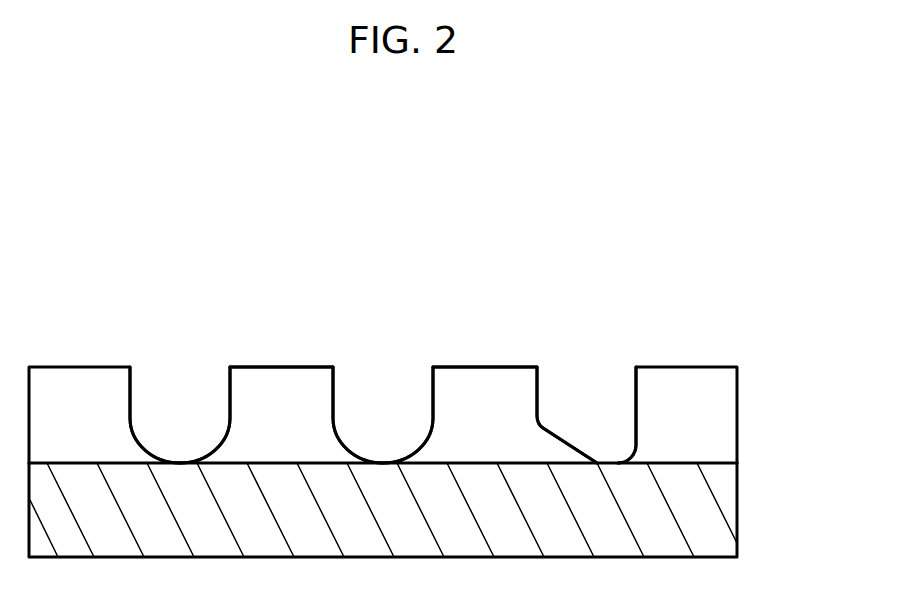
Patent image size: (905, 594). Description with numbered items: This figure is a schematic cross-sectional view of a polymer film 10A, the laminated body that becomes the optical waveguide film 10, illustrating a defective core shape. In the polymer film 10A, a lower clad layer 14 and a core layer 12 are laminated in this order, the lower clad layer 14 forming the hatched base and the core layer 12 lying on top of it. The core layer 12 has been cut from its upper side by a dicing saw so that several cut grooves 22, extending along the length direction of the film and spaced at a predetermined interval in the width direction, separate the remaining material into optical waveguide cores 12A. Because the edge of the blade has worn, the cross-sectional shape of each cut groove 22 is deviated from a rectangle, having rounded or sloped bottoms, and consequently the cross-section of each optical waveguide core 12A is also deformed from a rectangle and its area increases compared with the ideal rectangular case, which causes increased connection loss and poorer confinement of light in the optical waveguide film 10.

The polymer film 10A is at (640, 250).
The optical waveguide film 10 is at (442, 419).
The core layer 12 is at (748, 432).
The optical waveguide core 12A is at (297, 387).
The lower clad layer 14 is at (747, 521).
The cut groove 22 is at (175, 402).